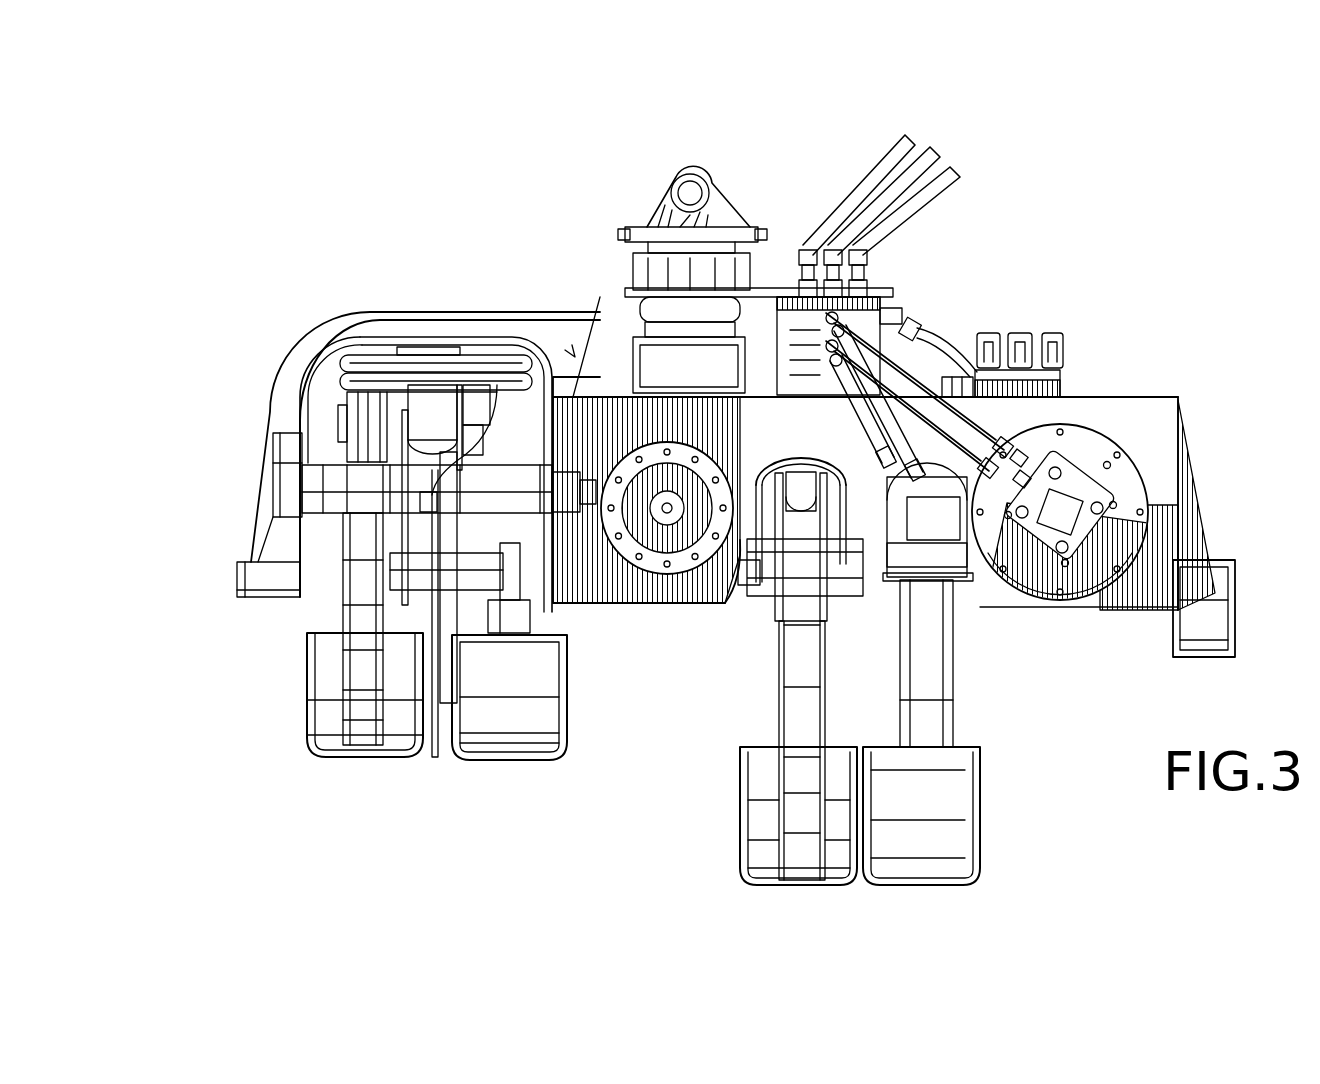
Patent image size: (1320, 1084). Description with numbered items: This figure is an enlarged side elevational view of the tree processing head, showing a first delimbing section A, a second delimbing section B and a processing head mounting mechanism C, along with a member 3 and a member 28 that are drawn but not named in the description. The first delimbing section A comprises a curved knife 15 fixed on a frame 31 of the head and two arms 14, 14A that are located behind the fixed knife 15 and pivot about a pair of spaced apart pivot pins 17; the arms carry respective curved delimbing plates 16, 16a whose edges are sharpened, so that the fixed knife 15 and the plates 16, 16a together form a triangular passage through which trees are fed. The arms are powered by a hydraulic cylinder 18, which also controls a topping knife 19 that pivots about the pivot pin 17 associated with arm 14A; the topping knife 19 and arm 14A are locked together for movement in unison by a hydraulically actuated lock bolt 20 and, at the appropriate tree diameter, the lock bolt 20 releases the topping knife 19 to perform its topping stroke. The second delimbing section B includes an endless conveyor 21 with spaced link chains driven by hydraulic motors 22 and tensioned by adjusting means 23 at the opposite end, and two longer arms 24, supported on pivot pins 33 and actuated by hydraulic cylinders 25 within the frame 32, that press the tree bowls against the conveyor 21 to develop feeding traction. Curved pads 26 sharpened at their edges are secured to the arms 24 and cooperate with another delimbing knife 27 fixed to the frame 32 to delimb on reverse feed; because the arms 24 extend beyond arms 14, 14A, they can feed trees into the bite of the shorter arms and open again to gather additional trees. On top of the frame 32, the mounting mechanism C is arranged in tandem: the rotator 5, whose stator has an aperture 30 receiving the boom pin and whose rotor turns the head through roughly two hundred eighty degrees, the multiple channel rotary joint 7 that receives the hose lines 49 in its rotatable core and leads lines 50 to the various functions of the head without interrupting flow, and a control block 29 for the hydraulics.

The frame 3 is at (423, 312).
The frame 31 is at (347, 333).
The hydraulic cylinder 18 is at (430, 415).
The pivot pin 17 is at (264, 490).
The curved knife 15 is at (237, 575).
The arm 14A is at (355, 620).
The delimbing plate 16a is at (390, 760).
The topping knife 19 is at (435, 762).
The delimbing plate 16 is at (525, 762).
The arm 14 is at (513, 615).
The lock bolt 20 is at (487, 570).
The adjusting means 23 is at (668, 520).
The pivot pin 33 is at (718, 585).
The hydraulic cylinder 25 is at (873, 455).
The arm 24 is at (925, 672).
The pad 26 is at (920, 885).
The endless conveyor 21 is at (985, 585).
The hydraulic motor 22 is at (1098, 585).
The delimbing knife 27 is at (1207, 655).
The frame 32 is at (1145, 420).
The control block 29 is at (1065, 380).
The lines 50 is at (897, 367).
The rotary joint 7 is at (910, 290).
The hose lines 49 is at (938, 192).
The mounting plate 28 is at (768, 290).
The aperture 30 is at (665, 185).
The rotator 5 is at (735, 190).
The first delimbing section A is at (255, 784).
The second delimbing section B is at (1062, 780).
The processing head mounting mechanism C is at (818, 153).